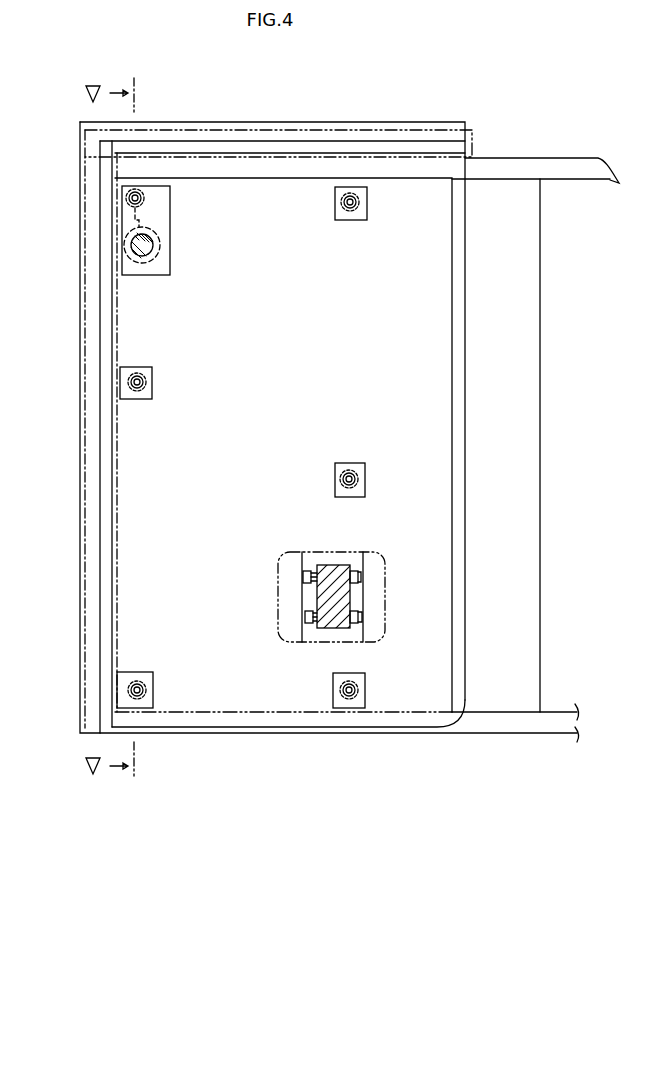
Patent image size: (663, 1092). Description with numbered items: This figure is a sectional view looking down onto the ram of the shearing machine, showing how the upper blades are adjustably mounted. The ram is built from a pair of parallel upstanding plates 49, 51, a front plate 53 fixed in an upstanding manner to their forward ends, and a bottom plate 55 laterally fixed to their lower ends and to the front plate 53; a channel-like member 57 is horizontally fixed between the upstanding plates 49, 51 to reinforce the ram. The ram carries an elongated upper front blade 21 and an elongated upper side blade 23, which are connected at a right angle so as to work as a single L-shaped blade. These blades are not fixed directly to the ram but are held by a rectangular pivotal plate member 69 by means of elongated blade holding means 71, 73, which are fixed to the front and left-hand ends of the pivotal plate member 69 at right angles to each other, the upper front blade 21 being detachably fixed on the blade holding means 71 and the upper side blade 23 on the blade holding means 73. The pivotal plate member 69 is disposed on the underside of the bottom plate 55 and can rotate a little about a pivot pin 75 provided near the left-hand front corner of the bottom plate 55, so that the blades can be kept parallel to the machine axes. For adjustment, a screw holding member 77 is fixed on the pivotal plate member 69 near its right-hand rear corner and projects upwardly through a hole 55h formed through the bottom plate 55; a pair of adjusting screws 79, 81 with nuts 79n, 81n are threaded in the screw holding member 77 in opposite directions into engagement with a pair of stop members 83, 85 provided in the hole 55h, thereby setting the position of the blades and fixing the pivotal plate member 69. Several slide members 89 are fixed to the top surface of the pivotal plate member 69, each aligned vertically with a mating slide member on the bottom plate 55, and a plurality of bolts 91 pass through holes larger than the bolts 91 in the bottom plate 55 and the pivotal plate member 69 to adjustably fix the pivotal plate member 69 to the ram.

The upper front blade 21 is at (80, 358).
The upper side blade 23 is at (339, 125).
The upstanding plate 49 is at (520, 158).
The upstanding plate 51 is at (508, 727).
The front plate 53 is at (82, 553).
The bottom plate 55 is at (287, 706).
The hole 55h is at (293, 640).
The channel-like member 57 is at (541, 618).
The pivotal plate member 69 is at (465, 633).
The blade holding means 71 is at (100, 380).
The blade holding means 73 is at (296, 146).
The pivot pin 75 is at (155, 245).
The screw holding member 77 is at (338, 565).
The adjusting screw 79 is at (302, 570).
The nut 79n is at (356, 571).
The adjusting screw 81 is at (362, 612).
The nut 81n is at (306, 617).
The stop member 83 is at (302, 586).
The stop member 85 is at (365, 592).
The slide member 89 is at (166, 216).
The bolt 91 is at (142, 198).